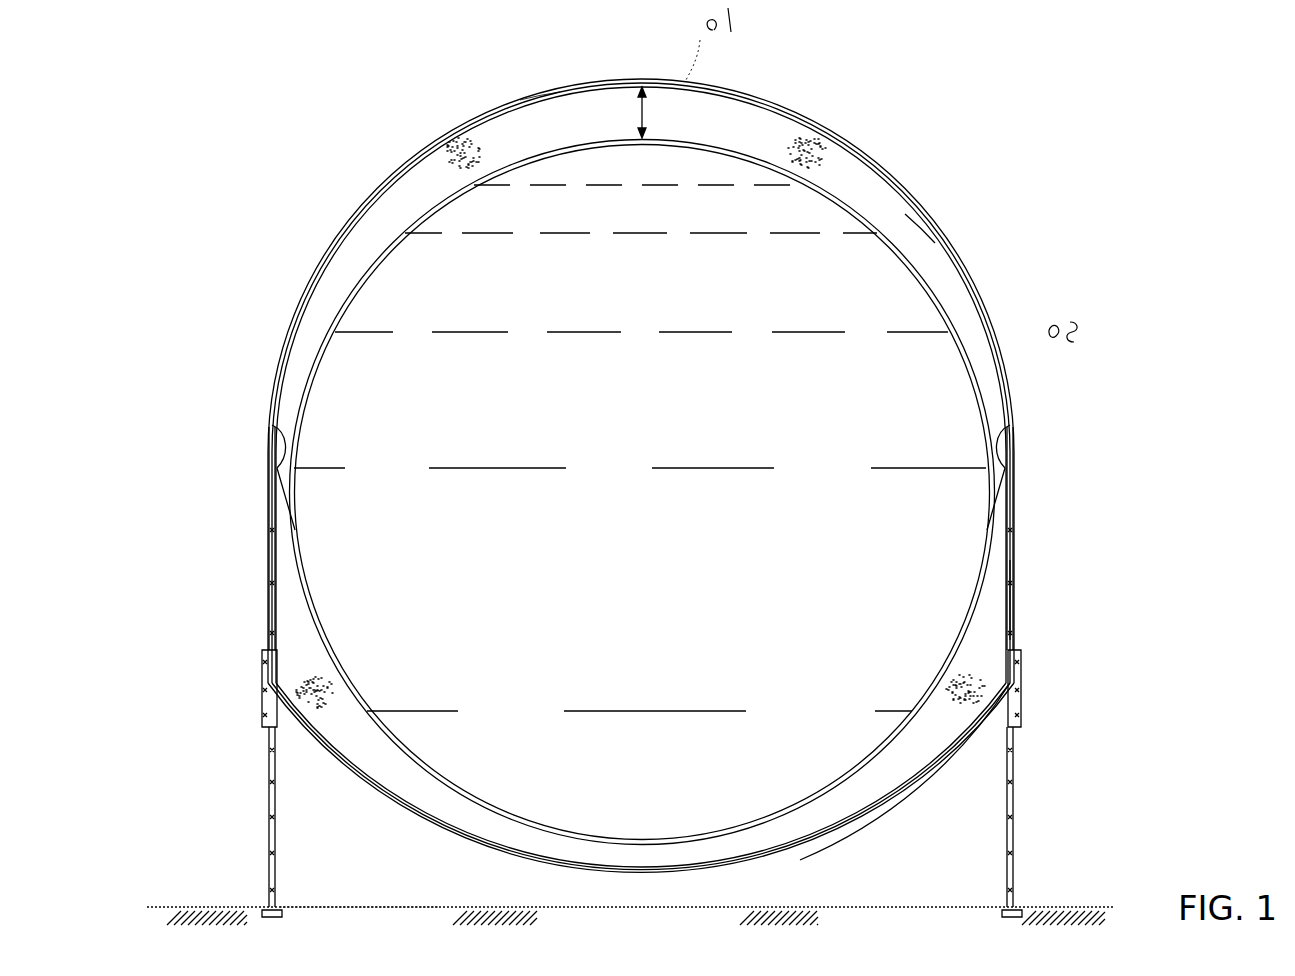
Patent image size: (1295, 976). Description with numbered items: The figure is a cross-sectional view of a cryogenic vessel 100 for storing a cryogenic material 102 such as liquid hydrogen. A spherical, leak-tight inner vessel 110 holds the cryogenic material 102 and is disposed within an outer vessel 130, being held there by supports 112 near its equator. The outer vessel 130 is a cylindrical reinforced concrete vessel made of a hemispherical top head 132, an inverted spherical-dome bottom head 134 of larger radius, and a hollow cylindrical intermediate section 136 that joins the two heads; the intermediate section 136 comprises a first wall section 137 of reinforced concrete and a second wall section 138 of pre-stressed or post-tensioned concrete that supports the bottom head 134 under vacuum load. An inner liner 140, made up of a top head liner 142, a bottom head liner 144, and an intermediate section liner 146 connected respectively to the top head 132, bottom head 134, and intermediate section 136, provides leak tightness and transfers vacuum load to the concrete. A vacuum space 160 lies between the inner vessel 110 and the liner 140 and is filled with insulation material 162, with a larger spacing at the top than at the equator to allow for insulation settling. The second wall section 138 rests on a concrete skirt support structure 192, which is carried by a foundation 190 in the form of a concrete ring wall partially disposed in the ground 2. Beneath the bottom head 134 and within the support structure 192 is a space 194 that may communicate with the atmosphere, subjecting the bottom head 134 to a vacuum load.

The ground 2 is at (165, 907).
The cryogenic vessel 100 is at (318, 123).
The cryogenic material 102 is at (905, 296).
The inner vessel 110 is at (858, 197).
The supports 112 is at (272, 425).
The outer vessel 130 is at (689, 469).
The top head 132 is at (781, 103).
The bottom head 134 is at (893, 805).
The intermediate section 136 is at (1022, 557).
The first wall section 137 is at (1014, 495).
The second wall section 138 is at (1021, 674).
The inner liner 140 is at (944, 213).
The top head liner 142 is at (921, 214).
The bottom head liner 144 is at (858, 807).
The intermediate section liner 146 is at (1008, 600).
The vacuum space 160 is at (530, 120).
The insulation material 162 is at (452, 133).
The foundation 190 is at (1022, 907).
The support structure 192 is at (1017, 793).
The space 194 is at (300, 828).